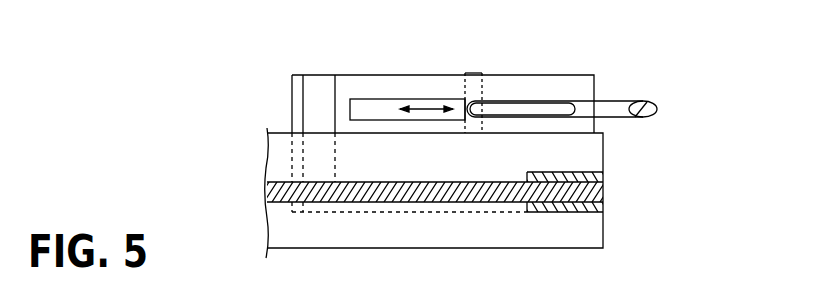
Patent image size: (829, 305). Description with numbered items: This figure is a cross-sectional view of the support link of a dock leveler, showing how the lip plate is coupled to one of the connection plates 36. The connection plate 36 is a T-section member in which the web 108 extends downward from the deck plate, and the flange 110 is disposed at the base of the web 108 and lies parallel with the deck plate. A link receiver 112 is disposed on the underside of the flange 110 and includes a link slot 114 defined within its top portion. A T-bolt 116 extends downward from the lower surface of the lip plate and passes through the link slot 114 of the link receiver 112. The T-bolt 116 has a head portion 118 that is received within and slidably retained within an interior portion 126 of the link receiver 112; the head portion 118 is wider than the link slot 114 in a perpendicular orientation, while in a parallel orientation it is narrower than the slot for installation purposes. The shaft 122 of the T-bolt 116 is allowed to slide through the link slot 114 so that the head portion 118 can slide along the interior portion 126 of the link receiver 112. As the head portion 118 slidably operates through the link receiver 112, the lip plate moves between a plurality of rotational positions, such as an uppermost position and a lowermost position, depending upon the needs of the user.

The connection plate 36 is at (473, 248).
The web 108 is at (282, 182).
The flange 110 is at (365, 232).
The link receiver 112 is at (546, 75).
The link slot 114 is at (415, 98).
The T-bolt 116 is at (635, 96).
The head portion 118 is at (468, 101).
The shaft 122 is at (610, 112).
The interior portion 126 is at (377, 110).